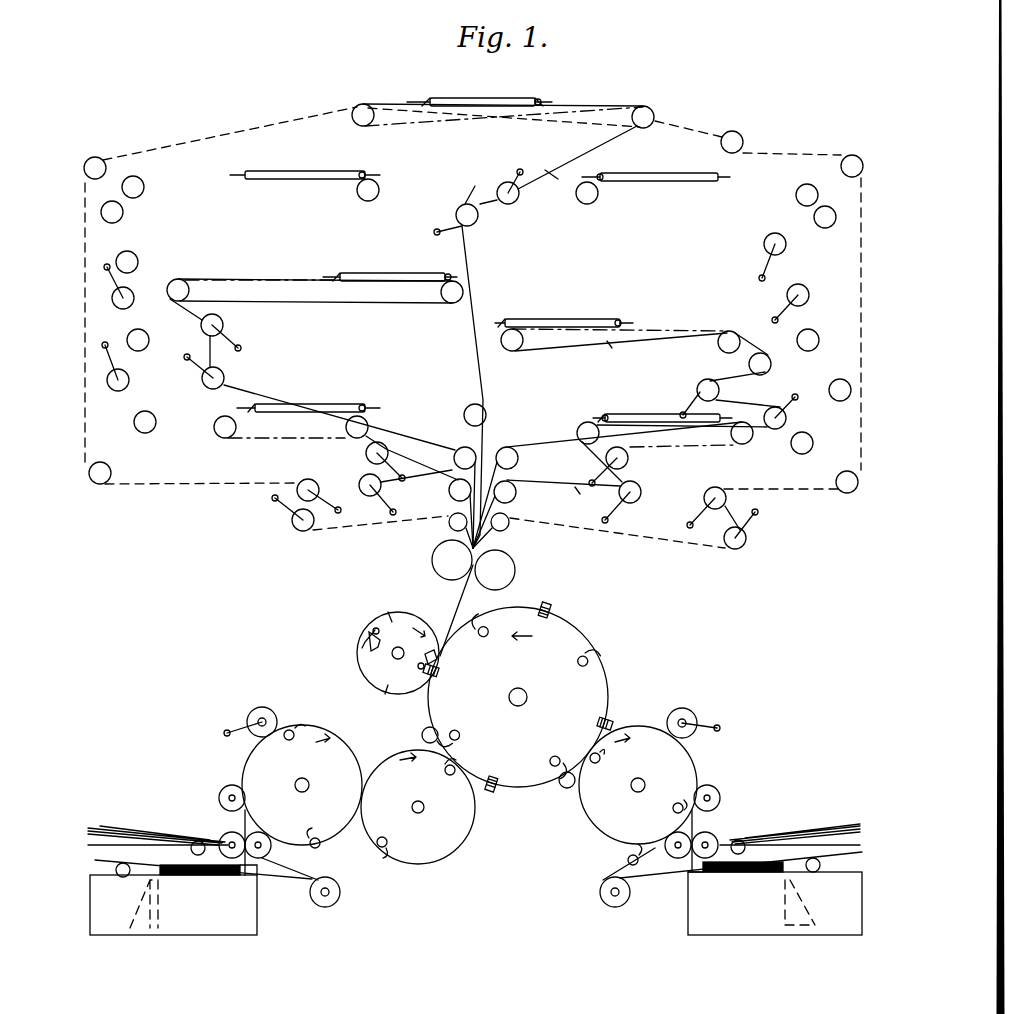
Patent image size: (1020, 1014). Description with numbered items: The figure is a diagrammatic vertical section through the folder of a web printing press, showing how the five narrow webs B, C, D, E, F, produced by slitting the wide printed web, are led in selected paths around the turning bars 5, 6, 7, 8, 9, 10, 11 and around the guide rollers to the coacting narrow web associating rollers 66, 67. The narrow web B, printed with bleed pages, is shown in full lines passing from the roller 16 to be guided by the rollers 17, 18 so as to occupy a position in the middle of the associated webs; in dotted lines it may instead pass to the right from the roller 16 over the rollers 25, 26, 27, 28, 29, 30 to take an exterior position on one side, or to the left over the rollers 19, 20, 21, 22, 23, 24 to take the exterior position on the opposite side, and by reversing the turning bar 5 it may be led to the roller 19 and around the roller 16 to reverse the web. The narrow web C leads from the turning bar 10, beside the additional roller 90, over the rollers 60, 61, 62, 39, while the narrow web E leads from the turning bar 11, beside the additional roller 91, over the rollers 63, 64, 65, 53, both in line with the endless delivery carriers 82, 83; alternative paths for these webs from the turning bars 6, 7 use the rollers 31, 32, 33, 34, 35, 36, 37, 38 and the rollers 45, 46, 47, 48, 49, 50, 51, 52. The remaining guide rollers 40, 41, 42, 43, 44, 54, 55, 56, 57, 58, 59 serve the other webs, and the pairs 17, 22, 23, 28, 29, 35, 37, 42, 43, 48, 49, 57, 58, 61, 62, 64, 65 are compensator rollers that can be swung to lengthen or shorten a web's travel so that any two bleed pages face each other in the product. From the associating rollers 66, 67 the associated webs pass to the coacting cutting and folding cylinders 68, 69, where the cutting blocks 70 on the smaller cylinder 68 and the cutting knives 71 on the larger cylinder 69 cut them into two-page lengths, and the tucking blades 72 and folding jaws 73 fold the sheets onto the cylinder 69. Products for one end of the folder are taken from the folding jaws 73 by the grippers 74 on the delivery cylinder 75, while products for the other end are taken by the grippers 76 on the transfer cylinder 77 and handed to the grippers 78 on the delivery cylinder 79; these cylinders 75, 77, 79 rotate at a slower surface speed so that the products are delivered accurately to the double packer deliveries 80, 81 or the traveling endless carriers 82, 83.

The turning bar 5 is at (527, 97).
The turning bar 6 is at (305, 163).
The turning bar 7 is at (672, 180).
The turning bar 8 is at (338, 272).
The turning bar 9 is at (620, 320).
The turning bar 10 is at (362, 405).
The turning bar 11 is at (614, 413).
The roller 16 is at (644, 107).
The compensator roller 17 is at (520, 198).
The guide roller 18 is at (468, 407).
The guide roller 19 is at (355, 121).
The guide roller 20 is at (97, 160).
The guide roller 21 is at (105, 463).
The compensator roller 22 is at (303, 480).
The compensator roller 23 is at (292, 523).
The guide roller 24 is at (449, 523).
The guide roller 25 is at (732, 131).
The guide roller 26 is at (841, 166).
The guide roller 27 is at (842, 473).
The compensator roller 28 is at (722, 491).
The compensator roller 29 is at (746, 538).
The guide roller 30 is at (509, 522).
The guide roller 31 is at (360, 197).
The guide roller 32 is at (143, 179).
The guide roller 33 is at (123, 212).
The guide roller 34 is at (134, 253).
The compensator roller 35 is at (133, 291).
The guide roller 36 is at (142, 327).
The compensator roller 37 is at (129, 376).
The guide roller 38 is at (148, 411).
The guide roller 39 is at (449, 492).
The guide roller 40 is at (447, 303).
The guide roller 41 is at (189, 292).
The compensator roller 42 is at (223, 325).
The compensator roller 43 is at (224, 376).
The guide roller 44 is at (454, 457).
The guide roller 45 is at (598, 193).
The guide roller 46 is at (796, 192).
The guide roller 47 is at (814, 216).
The compensator roller 48 is at (786, 245).
The compensator roller 49 is at (801, 285).
The guide roller 50 is at (819, 327).
The guide roller 51 is at (838, 379).
The guide roller 52 is at (813, 441).
The guide roller 53 is at (516, 493).
The guide roller 54 is at (518, 350).
The guide roller 55 is at (718, 342).
The guide roller 56 is at (749, 364).
The compensator roller 57 is at (719, 389).
The compensator roller 58 is at (792, 411).
The guide roller 59 is at (518, 458).
The guide roller 60 is at (343, 428).
The compensator roller 61 is at (366, 453).
The compensator roller 62 is at (359, 485).
The guide roller 63 is at (580, 426).
The compensator roller 64 is at (628, 456).
The compensator roller 65 is at (640, 485).
The associating roller 66 is at (432, 559).
The associating roller 67 is at (515, 568).
The cutting and folding cylinder 68 is at (356, 660).
The cutting and folding cylinder 69 is at (518, 697).
The cutting block 70 is at (372, 628).
The cutting knife 71 is at (548, 618).
The tucking blade 72 is at (380, 646).
The folding jaw 73 is at (484, 625).
The grippers 74 is at (598, 763).
The delivery cylinder 75 is at (302, 785).
The grippers 76 is at (398, 862).
The transfer cylinder 77 is at (418, 807).
The grippers 78 is at (297, 725).
The delivery cylinder 79 is at (250, 745).
The double packer delivery 80 is at (775, 898).
The double packer delivery 81 is at (173, 900).
The traveling endless carrier 82 is at (632, 900).
The traveling endless carrier 83 is at (311, 900).
The additional roller 90 is at (217, 435).
The additional roller 91 is at (750, 441).
The narrow web B is at (546, 162).
The narrow web C is at (423, 478).
The narrow web D is at (332, 305).
The narrow web E is at (573, 480).
The narrow web F is at (620, 351).